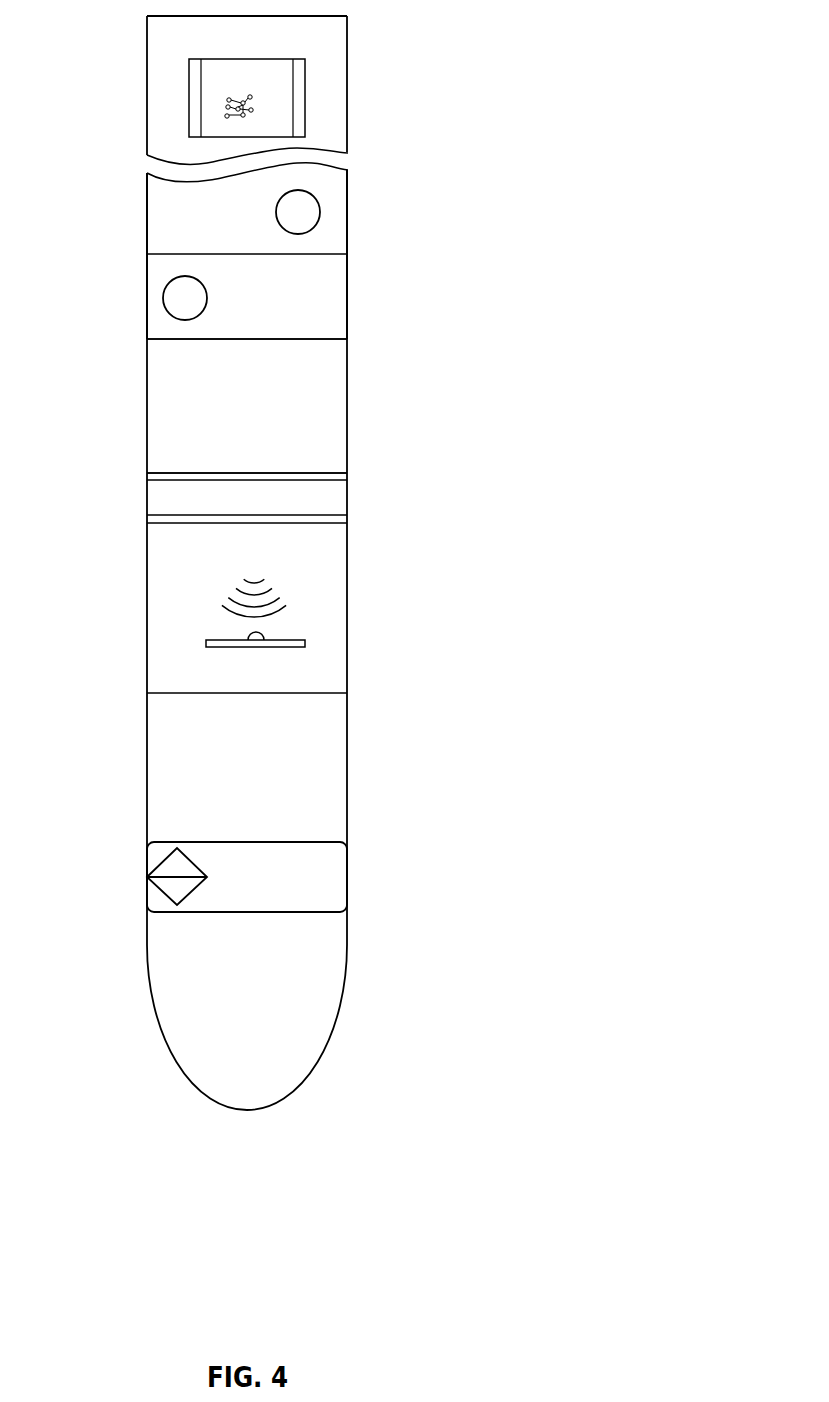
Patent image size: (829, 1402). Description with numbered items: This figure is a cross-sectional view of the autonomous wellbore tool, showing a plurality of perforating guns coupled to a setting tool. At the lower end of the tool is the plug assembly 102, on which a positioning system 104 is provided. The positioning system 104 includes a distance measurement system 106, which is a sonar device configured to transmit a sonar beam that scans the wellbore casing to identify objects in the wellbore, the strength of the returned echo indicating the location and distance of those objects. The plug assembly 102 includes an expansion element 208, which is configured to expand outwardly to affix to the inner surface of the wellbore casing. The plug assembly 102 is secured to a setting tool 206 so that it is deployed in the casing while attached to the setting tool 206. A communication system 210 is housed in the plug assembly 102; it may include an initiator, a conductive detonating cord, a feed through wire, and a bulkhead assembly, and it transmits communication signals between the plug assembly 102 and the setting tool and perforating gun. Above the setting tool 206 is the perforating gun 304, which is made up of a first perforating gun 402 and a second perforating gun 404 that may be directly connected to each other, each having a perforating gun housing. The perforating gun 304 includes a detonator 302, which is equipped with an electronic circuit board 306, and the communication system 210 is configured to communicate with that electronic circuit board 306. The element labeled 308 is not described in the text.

The plug assembly 102 is at (347, 784).
The positioning system 104 is at (347, 855).
The distance measurement system 106 is at (158, 866).
The setting tool 206 is at (147, 397).
The expansion element 208 is at (347, 498).
The communication system 210 is at (277, 605).
The detonator 302 is at (190, 97).
The perforating gun 304 is at (347, 95).
The electronic circuit board 306 is at (224, 115).
The sensor 308 is at (317, 200).
The first perforating gun 402 is at (263, 224).
The second perforating gun 404 is at (263, 320).